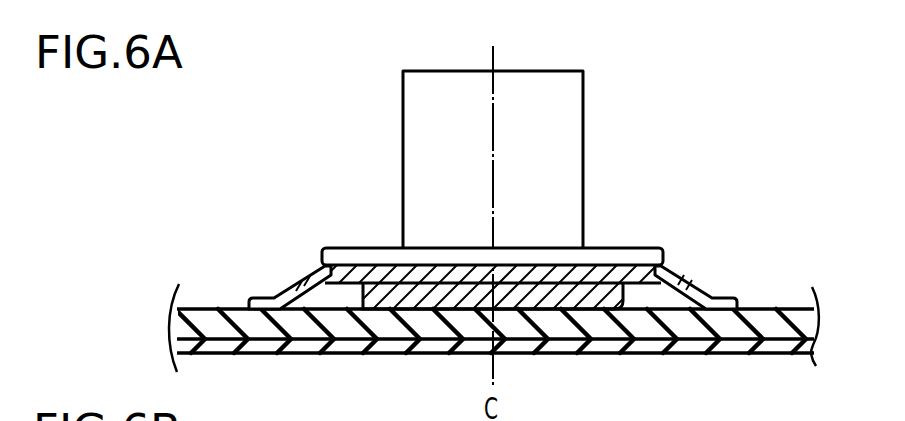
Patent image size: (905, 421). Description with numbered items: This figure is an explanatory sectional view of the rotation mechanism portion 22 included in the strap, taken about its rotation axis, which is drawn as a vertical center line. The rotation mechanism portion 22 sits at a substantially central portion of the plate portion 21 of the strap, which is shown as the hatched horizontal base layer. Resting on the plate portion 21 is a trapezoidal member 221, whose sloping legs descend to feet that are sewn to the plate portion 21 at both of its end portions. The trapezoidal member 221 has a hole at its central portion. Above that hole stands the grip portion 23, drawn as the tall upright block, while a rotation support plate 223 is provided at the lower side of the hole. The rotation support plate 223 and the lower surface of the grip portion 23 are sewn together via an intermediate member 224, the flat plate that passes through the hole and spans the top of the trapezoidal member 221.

The plate portion 21 is at (782, 309).
The rotation mechanism portion 22 is at (530, 211).
The trapezoidal member 221 is at (678, 284).
The rotation support plate 223 is at (609, 303).
The intermediate member 224 is at (548, 264).
The grip portion 23 is at (571, 114).